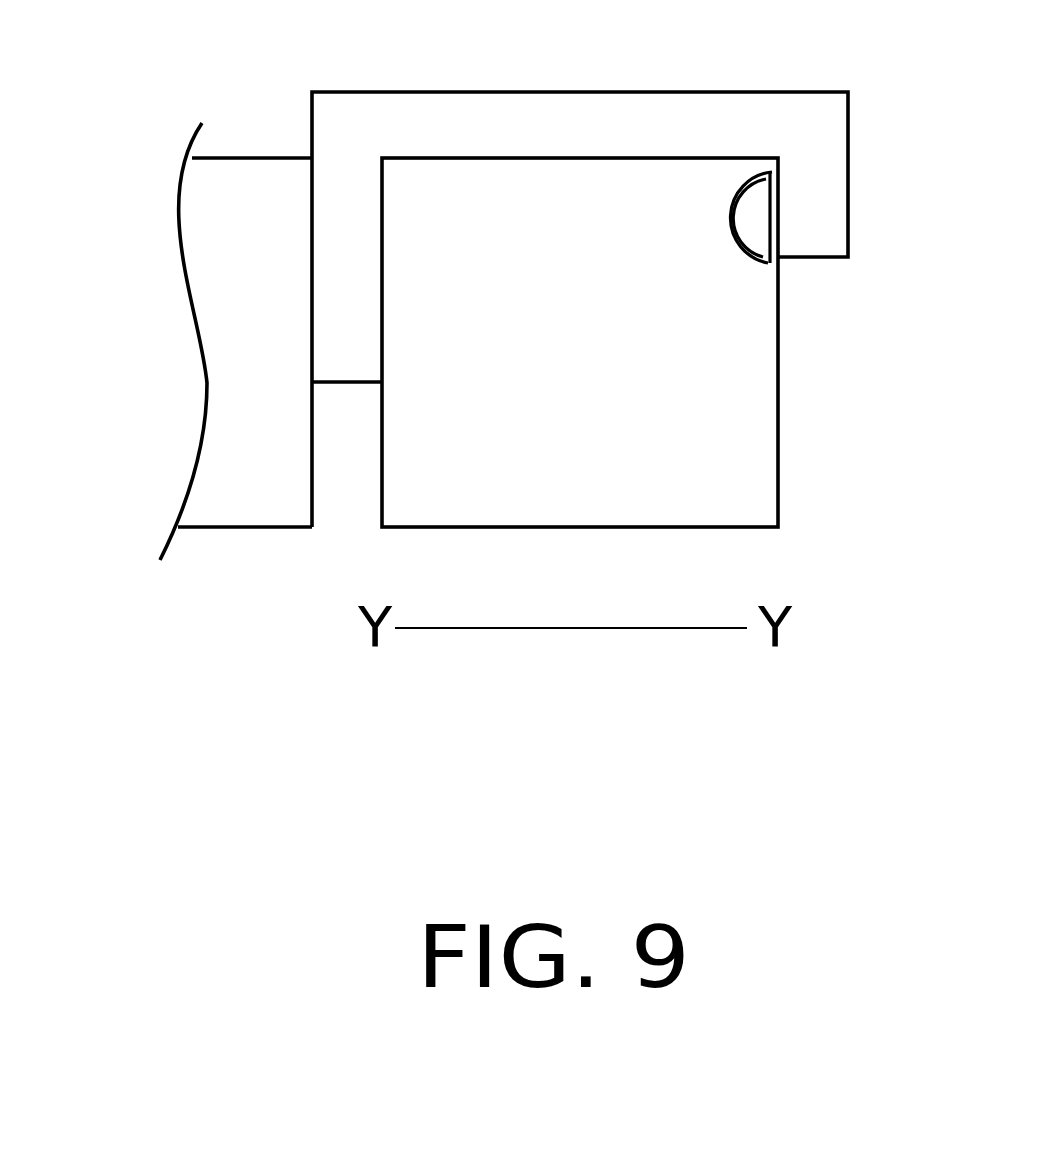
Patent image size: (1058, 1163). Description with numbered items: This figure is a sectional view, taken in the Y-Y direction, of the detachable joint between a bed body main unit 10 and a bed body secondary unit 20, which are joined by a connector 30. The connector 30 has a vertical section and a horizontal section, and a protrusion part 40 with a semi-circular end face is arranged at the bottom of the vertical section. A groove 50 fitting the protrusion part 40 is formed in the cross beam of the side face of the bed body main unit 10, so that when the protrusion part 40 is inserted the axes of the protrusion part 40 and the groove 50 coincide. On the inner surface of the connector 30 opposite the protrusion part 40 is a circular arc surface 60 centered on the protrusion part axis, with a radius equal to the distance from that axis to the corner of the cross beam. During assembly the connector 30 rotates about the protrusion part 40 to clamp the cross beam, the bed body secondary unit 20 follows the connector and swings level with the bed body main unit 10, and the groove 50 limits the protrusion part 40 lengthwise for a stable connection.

The bed body main unit 10 is at (527, 185).
The bed body secondary unit 20 is at (238, 257).
The connector 30 is at (835, 237).
The protrusion part 40 is at (759, 214).
The groove 50 is at (734, 205).
The circular arc surface 60 is at (377, 215).